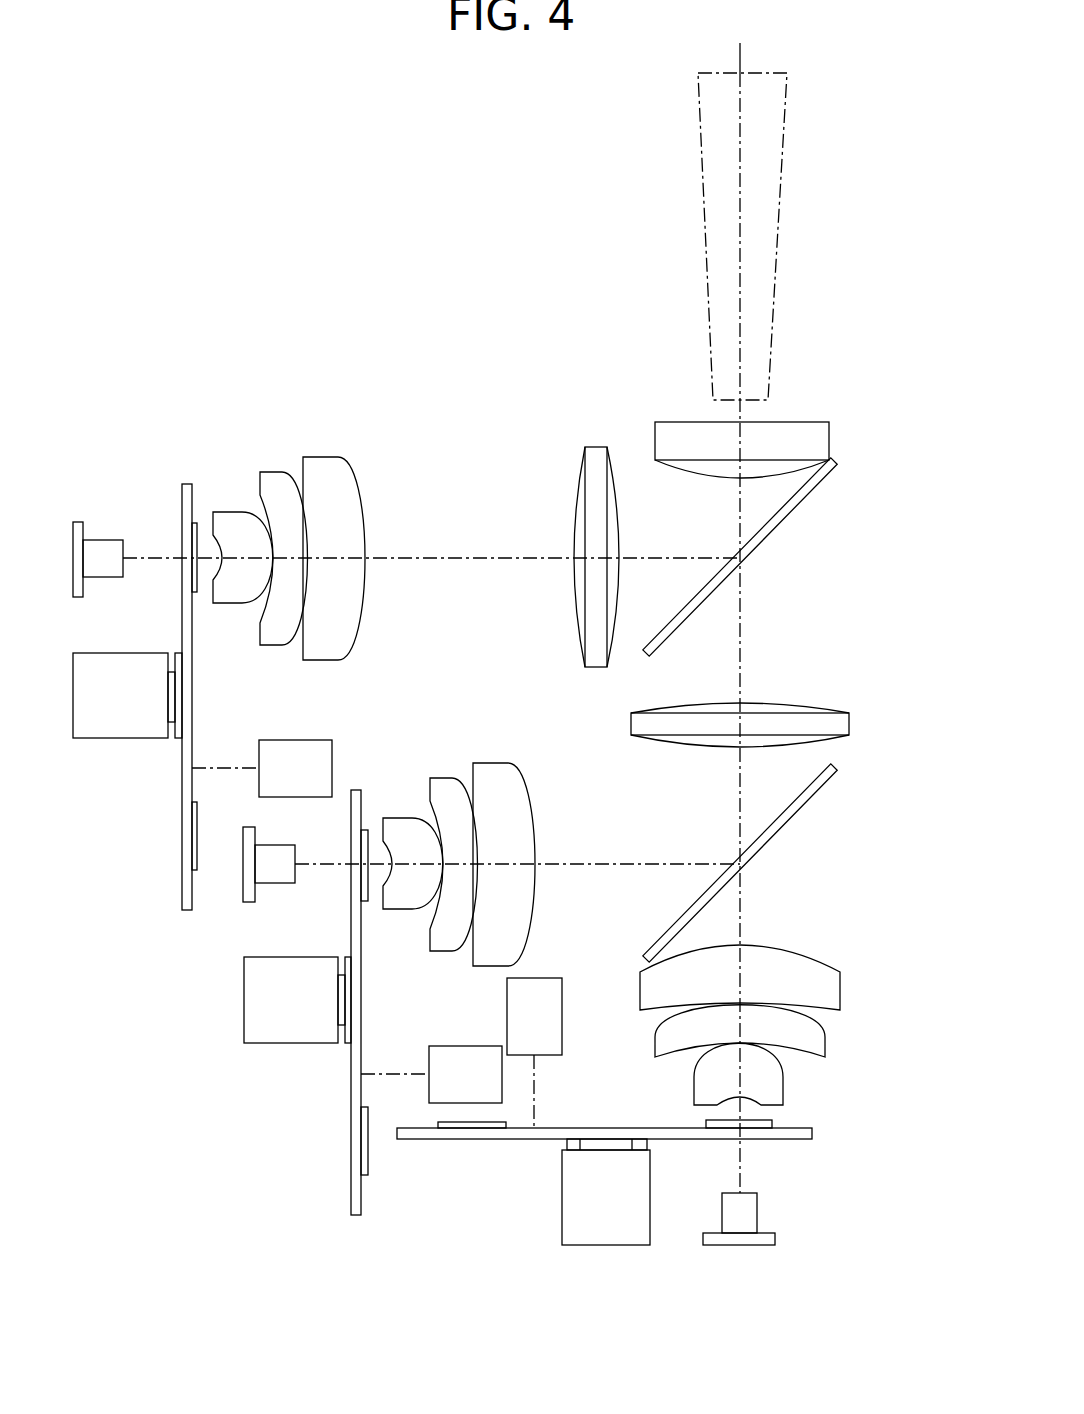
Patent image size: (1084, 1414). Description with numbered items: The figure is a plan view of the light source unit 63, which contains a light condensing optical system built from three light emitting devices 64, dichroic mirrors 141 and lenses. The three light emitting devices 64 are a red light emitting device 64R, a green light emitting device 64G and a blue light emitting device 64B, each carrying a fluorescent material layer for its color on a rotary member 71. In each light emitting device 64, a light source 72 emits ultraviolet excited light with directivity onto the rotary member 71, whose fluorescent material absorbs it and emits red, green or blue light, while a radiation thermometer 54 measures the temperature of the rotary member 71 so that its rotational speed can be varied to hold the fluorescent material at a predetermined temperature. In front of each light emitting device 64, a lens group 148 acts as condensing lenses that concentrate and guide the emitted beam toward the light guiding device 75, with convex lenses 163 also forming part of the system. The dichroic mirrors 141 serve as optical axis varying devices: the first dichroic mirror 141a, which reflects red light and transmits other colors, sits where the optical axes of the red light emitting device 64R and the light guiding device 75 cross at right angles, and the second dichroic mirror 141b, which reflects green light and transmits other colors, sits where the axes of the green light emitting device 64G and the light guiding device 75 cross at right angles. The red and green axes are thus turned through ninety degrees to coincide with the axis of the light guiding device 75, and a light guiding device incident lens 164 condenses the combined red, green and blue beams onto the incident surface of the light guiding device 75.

The light source unit 63 is at (338, 335).
The light guiding device 75 is at (715, 162).
The light guiding device incident lens 164 is at (817, 435).
The convex lens 163 is at (599, 465).
The dichroic mirror 141 is at (765, 710).
The first dichroic mirror 141a is at (788, 513).
The second dichroic mirror 141b is at (783, 820).
The light emitting device 64 is at (517, 685).
The red light emitting device 64R is at (185, 465).
The green light emitting device 64G is at (290, 1132).
The blue light emitting device 64B is at (833, 1178).
The light source 72 is at (110, 547).
The rotary member 71 is at (182, 812).
The radiation thermometer 54 is at (307, 752).
The lens group 148 is at (268, 455).